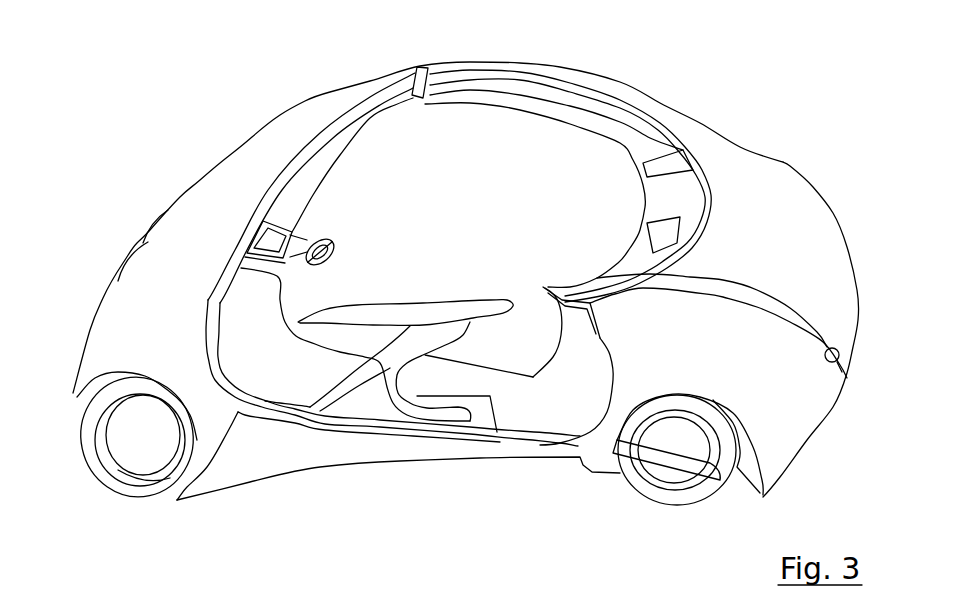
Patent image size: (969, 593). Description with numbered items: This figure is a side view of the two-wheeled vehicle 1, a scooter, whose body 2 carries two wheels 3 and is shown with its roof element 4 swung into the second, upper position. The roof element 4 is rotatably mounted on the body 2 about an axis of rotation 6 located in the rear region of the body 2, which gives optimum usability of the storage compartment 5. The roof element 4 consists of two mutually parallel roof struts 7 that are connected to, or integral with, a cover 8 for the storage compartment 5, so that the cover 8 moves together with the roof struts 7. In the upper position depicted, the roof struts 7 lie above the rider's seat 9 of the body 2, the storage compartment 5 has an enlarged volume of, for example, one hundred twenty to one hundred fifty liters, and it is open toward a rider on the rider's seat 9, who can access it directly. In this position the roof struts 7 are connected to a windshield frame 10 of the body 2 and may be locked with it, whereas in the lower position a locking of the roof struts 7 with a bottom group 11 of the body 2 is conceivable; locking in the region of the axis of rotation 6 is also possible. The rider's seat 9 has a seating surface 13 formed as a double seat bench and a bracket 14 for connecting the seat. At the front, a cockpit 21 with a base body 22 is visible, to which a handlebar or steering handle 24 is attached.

The two-wheeled vehicle 1 is at (762, 100).
The body 2 is at (107, 350).
The wheels 3 is at (110, 480).
The roof element 4 is at (671, 97).
The storage compartment 5 is at (675, 200).
The axis of rotation 6 is at (845, 364).
The roof struts 7 is at (587, 78).
The cover 8 is at (833, 210).
The rider's seat 9 is at (493, 287).
The windshield frame 10 is at (320, 105).
The bottom group 11 is at (477, 413).
The seating surface 13 is at (445, 304).
The bracket 14 is at (360, 380).
The cockpit 21 is at (265, 233).
The base body 22 is at (255, 262).
The steering handle 24 is at (333, 235).